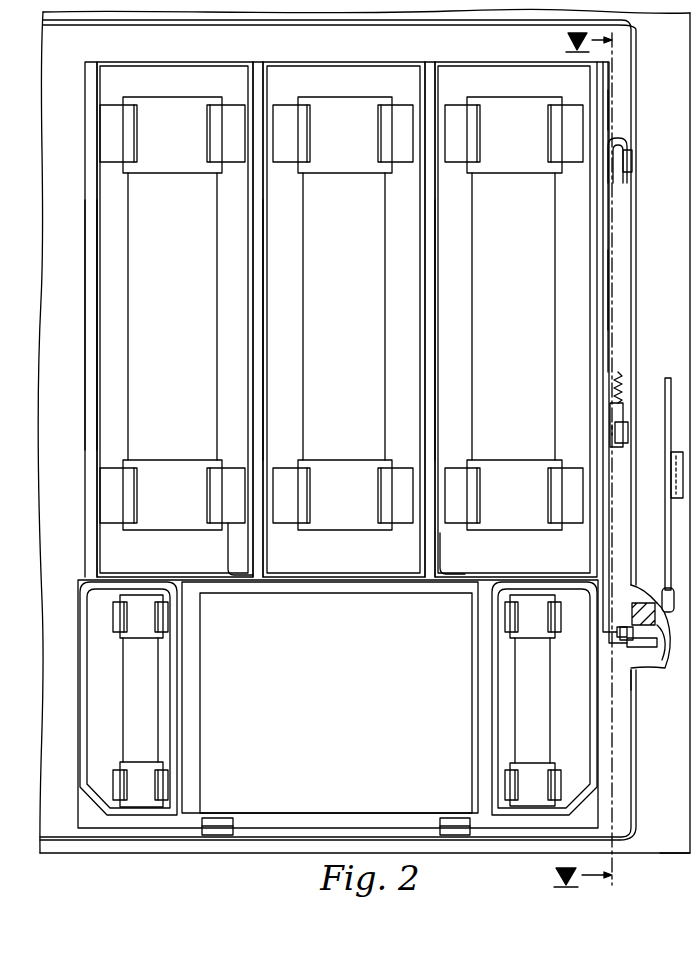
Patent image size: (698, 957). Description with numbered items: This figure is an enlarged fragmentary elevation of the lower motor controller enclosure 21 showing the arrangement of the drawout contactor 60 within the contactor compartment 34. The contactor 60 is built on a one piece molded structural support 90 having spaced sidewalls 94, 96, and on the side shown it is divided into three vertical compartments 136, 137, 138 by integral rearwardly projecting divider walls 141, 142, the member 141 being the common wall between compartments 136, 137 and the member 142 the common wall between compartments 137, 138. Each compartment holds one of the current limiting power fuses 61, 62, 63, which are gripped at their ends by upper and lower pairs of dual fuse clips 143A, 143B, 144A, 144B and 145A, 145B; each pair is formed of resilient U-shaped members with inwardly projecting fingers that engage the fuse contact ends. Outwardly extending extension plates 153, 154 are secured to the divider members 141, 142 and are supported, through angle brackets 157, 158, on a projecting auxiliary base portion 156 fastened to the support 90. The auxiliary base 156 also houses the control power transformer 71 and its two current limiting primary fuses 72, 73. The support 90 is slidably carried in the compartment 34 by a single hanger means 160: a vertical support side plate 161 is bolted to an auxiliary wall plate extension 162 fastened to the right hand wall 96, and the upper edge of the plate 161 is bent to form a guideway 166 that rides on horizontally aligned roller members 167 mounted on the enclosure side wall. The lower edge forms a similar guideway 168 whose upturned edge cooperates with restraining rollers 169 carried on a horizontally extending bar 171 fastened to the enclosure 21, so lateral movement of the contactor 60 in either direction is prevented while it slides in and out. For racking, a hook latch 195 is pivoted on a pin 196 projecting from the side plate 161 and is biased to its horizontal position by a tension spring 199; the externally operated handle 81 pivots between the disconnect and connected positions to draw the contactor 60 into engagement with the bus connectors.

The contactor compartment 34 is at (63, 42).
The drawout contactor 60 is at (66, 250).
The structural support 90 is at (88, 327).
The sidewall 94 is at (88, 393).
The current limiting power fuse 61 is at (174, 319).
The current limiting power fuse 62 is at (343, 319).
The current limiting power fuse 63 is at (514, 319).
The vertical compartment 136 is at (125, 73).
The vertical compartment 137 is at (348, 75).
The vertical compartment 138 is at (515, 75).
The divider wall 141 is at (256, 72).
The divider wall 142 is at (426, 72).
The dual fuse clips 143A is at (128, 107).
The dual fuse clips 143B is at (115, 522).
The dual fuse clips 144A is at (287, 107).
The dual fuse clips 144B is at (290, 522).
The dual fuse clips 145A is at (455, 107).
The dual fuse clips 145B is at (460, 522).
The extension plate 153 is at (264, 280).
The extension plate 154 is at (437, 238).
The auxiliary base portion 156 is at (80, 600).
The angle bracket 157 is at (223, 572).
The angle bracket 158 is at (466, 572).
The hanger means 160 is at (615, 213).
The support side plate 161 is at (610, 292).
The auxiliary wall plate extension 162 is at (603, 115).
The guideway 166 is at (620, 142).
The roller member 167 is at (623, 178).
The guideway 168 is at (615, 648).
The restraining roller 169 is at (640, 641).
The horizontally extending bar 171 is at (650, 651).
The hook latch 195 is at (612, 412).
The pin 196 is at (612, 430).
The tension spring 199 is at (622, 388).
The sidewall 96 is at (592, 320).
The handle 81 is at (659, 495).
The control power transformer 71 is at (343, 600).
The current limiting primary fuse 72 is at (126, 680).
The current limiting primary fuse 73 is at (542, 730).
The enclosure 21 is at (666, 855).